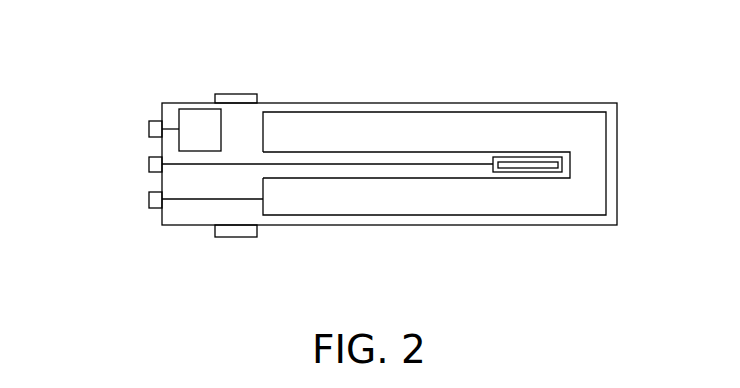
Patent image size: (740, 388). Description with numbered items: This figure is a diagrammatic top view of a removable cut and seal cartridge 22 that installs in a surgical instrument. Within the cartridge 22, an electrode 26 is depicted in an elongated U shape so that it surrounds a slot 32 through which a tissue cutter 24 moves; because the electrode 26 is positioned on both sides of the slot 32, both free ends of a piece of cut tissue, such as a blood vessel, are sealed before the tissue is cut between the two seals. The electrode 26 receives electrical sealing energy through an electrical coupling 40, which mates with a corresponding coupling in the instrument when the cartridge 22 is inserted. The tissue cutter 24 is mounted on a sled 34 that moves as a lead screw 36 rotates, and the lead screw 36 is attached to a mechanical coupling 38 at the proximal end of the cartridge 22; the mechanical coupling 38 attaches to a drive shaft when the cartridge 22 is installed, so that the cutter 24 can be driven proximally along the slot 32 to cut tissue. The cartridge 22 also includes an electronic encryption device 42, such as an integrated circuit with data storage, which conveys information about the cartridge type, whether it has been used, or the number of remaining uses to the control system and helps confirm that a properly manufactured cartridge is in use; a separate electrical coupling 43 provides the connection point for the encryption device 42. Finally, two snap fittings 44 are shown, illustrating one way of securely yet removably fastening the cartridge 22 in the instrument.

The removable cut and seal cartridge 22 is at (568, 225).
The tissue cutter 24 is at (530, 165).
The electrode 26 is at (533, 120).
The slot 32 is at (338, 168).
The sled 34 is at (493, 158).
The lead screw 36 is at (397, 163).
The mechanical coupling 38 is at (149, 167).
The electrical coupling 40 is at (149, 203).
The electronic encryption device 42 is at (195, 123).
The electrical coupling 43 is at (147, 127).
The snap fittings 44 is at (233, 93).